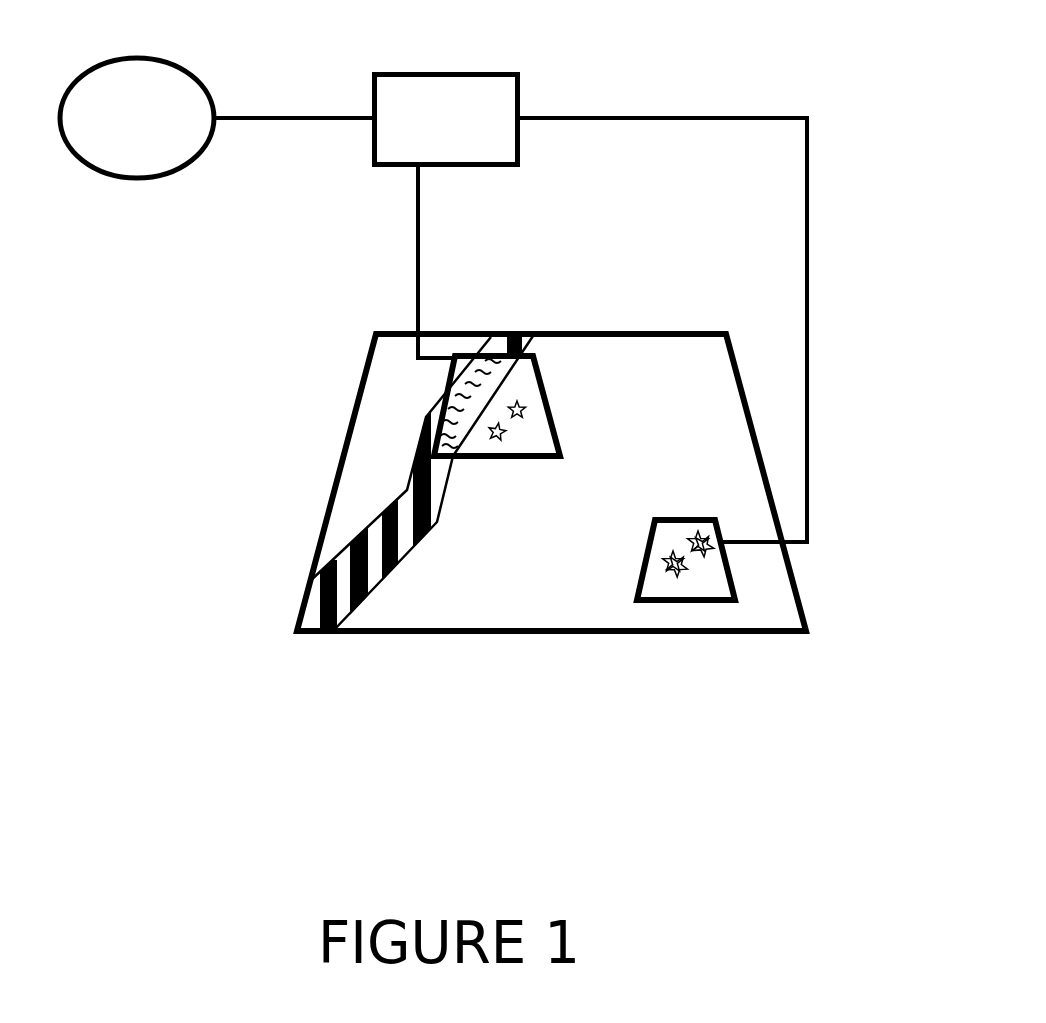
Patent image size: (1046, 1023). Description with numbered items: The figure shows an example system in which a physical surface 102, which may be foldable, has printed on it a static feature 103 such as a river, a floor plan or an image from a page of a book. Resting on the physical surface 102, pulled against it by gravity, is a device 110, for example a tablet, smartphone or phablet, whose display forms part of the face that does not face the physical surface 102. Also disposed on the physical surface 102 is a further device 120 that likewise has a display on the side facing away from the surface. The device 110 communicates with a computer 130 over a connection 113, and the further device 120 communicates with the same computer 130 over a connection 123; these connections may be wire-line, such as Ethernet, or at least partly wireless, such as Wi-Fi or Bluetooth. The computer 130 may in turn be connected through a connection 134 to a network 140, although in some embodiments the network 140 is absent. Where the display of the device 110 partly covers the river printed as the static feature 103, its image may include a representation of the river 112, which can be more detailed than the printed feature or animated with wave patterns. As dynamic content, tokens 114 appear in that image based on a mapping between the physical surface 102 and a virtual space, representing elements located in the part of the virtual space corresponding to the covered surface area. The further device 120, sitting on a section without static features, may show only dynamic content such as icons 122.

The physical surface 102 is at (330, 500).
The static feature 103 is at (368, 593).
The device 110 is at (517, 462).
The representation of the river 112 is at (510, 378).
The connection 113 is at (418, 248).
The tokens 114 is at (506, 432).
The further device 120 is at (693, 603).
The icons 122 is at (690, 542).
The connection 123 is at (807, 342).
The computer 130 is at (446, 120).
The connection 134 is at (288, 117).
The network 140 is at (137, 118).